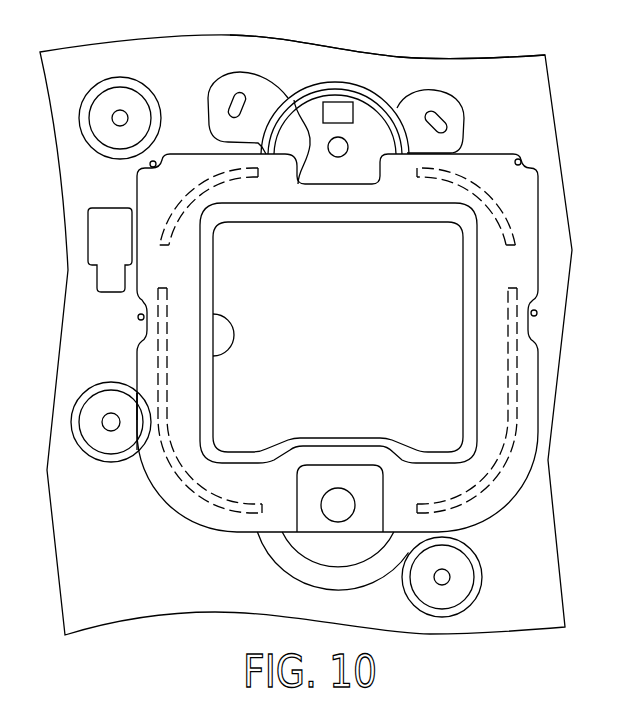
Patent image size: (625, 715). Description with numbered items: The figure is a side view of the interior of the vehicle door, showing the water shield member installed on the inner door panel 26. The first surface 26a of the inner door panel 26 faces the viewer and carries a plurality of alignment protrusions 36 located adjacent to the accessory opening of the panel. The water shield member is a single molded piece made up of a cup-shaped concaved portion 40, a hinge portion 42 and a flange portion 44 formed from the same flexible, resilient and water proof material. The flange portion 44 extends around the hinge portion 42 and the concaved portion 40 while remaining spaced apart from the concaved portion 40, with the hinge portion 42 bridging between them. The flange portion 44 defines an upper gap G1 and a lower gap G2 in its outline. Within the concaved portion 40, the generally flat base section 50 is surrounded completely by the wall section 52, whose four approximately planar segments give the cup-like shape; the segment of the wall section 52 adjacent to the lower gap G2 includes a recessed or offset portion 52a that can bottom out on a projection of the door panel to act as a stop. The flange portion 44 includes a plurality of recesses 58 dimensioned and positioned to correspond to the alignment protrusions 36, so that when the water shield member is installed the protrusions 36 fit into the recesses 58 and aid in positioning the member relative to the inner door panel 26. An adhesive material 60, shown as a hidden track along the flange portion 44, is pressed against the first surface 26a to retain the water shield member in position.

The inner door panel 26 is at (480, 50).
The first surface 26a is at (396, 82).
The alignment protrusions 36 is at (152, 161).
The cup-shaped concaved portion 40 is at (430, 278).
The hinge portion 42 is at (472, 395).
The flange portion 44 is at (502, 493).
The base section 50 is at (250, 412).
The wall section 52 is at (232, 350).
The offset portion 52a is at (318, 437).
The recesses 58 is at (150, 165).
The adhesive material 60 is at (199, 183).
The upper gap G1 is at (294, 100).
The lower gap G2 is at (385, 503).